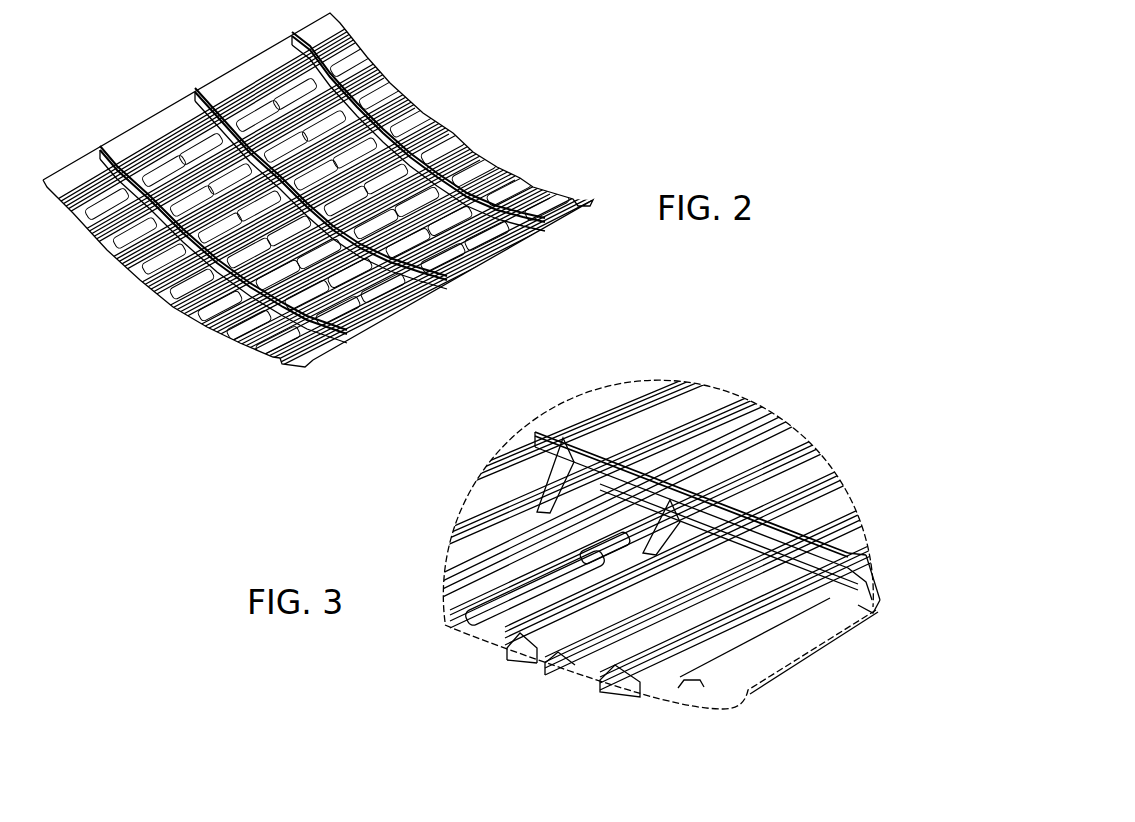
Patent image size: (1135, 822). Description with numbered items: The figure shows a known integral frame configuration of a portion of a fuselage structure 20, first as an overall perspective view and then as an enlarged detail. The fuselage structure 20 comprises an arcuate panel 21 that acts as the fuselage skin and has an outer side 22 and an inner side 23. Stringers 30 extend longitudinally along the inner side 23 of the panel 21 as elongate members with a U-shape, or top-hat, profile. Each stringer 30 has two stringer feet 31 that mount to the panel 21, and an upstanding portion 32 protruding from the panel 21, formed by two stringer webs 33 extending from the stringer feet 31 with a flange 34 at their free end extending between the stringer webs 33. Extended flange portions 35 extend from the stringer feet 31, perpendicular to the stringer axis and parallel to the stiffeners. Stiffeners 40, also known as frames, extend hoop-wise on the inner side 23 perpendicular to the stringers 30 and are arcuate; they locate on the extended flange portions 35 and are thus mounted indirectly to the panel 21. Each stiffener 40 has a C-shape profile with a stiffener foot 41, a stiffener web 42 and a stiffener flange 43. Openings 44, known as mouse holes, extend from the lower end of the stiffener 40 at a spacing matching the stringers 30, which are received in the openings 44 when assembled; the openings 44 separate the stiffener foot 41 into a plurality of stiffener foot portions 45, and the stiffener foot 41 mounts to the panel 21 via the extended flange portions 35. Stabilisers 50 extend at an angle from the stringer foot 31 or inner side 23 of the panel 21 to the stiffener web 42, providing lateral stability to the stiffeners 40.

In FIG. 2, the fuselage structure 20 is at (466, 52).
In FIG. 3, the fuselage structure 20 is at (838, 370).
In FIG. 2, the panel 21 is at (262, 66).
In FIG. 3, the panel 21 is at (797, 640).
In FIG. 2, the outer side 22 is at (305, 370).
In FIG. 2, the inner side 23 is at (318, 357).
In FIG. 2, the stringer 30 is at (447, 130).
In FIG. 3, the stringer 30 is at (832, 470).
In FIG. 3, the stringer foot 31 is at (548, 662).
In FIG. 3, the upstanding portion 32 is at (503, 645).
In FIG. 3, the stringer web 33 is at (603, 672).
In FIG. 3, the flange 34 is at (867, 530).
In FIG. 3, the extended flange portion 35 is at (467, 618).
In FIG. 2, the stiffener 40 is at (100, 146).
In FIG. 3, the stiffener 40 is at (518, 445).
In FIG. 3, the stiffener foot 41 is at (873, 613).
In FIG. 3, the stiffener web 42 is at (880, 582).
In FIG. 3, the stiffener flange 43 is at (547, 427).
In FIG. 3, the opening 44 is at (695, 540).
In FIG. 3, the stiffener foot portion 45 is at (522, 472).
In FIG. 3, the stabiliser 50 is at (567, 472).